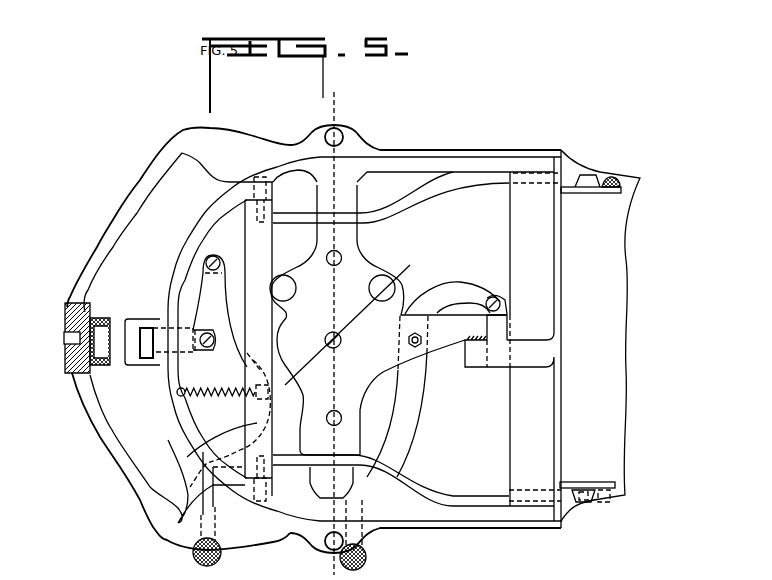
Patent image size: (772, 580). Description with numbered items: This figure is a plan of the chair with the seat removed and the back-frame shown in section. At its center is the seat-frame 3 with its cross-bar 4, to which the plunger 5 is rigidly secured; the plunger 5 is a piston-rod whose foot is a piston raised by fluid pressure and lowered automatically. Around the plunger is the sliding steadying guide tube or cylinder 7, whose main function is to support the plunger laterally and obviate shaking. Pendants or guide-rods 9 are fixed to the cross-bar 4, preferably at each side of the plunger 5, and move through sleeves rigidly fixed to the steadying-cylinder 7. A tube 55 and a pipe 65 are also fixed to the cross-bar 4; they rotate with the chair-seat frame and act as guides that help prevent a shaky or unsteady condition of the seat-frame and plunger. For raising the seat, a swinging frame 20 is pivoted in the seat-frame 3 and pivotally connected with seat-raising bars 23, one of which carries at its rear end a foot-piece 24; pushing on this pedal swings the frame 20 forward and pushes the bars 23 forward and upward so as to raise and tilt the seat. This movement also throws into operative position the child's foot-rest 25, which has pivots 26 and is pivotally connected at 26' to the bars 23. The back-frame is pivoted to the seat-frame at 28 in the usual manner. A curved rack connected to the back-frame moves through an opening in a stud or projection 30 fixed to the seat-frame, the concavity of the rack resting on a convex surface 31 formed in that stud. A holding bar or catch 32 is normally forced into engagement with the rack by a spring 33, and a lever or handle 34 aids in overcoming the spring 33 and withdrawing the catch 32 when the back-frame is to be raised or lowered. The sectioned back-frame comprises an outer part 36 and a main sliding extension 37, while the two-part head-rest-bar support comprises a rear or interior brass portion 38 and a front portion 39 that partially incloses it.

The seat-frame 3 is at (180, 430).
The cross-bar 4 is at (307, 247).
The plunger 5 is at (342, 340).
The sliding steadying guide tube or cylinder 7 is at (351, 362).
The pendants or guide-rods 9 is at (329, 412).
The swinging frame 20 is at (250, 235).
The seat-raising bars 23 is at (492, 184).
The foot-piece 24 is at (222, 553).
The child's foot-rest 25 is at (580, 194).
The pivots 26 is at (596, 338).
The pivotal connection 26' is at (593, 339).
The pivot 28 is at (182, 155).
The stud or projection 30 is at (143, 360).
The convex surface 31 is at (133, 322).
The holding bar or catch 32 is at (160, 358).
The spring 33 is at (218, 387).
The lever or handle 34 is at (220, 430).
The outer part 36 is at (75, 378).
The main sliding extension 37 is at (66, 338).
The rear or interior portion 38 is at (90, 350).
The front portion 39 is at (100, 362).
The tube 55 is at (382, 288).
The pipe 65 is at (283, 288).